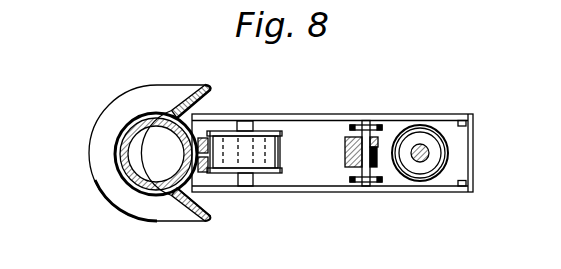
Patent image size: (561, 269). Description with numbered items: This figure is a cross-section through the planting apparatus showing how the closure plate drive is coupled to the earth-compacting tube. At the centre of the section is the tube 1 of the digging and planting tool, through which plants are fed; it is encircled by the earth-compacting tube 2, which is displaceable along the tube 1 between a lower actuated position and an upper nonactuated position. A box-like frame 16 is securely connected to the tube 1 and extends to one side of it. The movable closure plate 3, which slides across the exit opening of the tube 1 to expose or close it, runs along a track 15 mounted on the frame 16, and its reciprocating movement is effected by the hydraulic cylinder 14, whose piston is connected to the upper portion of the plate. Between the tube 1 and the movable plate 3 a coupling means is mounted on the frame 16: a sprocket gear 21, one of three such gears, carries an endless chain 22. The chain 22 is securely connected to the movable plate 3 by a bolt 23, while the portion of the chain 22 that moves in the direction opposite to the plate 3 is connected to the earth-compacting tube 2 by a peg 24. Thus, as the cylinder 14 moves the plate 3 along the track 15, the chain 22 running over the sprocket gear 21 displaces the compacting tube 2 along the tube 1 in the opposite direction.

The tube 1 is at (131, 133).
The earth-compacting tube 2 is at (100, 157).
The closure plate 3 is at (368, 136).
The hydraulic cylinder 14 is at (447, 148).
The track 15 is at (353, 126).
The box-like frame 16 is at (455, 192).
The sprocket gear 21 is at (260, 143).
The endless chain 22 is at (204, 140).
The bolt 23 is at (377, 168).
The peg 24 is at (204, 170).